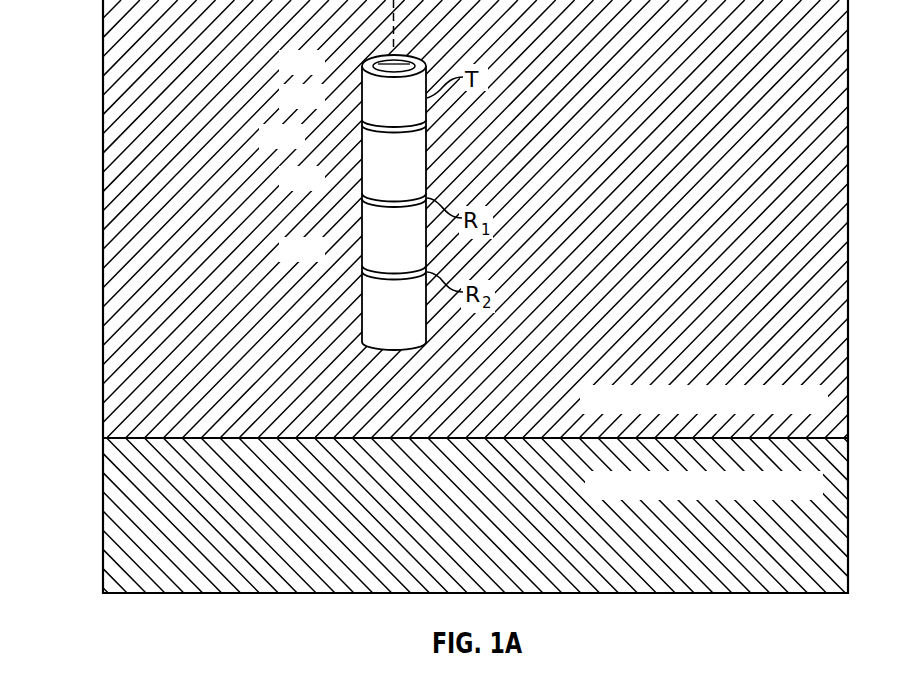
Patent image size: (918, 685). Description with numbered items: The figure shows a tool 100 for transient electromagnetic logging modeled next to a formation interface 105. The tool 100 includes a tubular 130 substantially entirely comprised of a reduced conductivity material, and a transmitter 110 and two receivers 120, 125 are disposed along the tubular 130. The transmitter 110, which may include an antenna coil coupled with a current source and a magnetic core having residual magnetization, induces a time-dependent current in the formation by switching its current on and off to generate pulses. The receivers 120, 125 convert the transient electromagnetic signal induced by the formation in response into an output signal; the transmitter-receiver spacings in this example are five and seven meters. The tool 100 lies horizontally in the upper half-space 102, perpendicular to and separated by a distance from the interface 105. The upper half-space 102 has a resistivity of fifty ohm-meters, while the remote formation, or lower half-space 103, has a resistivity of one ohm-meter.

The tool 100 is at (337, 150).
The upper half-space 102 is at (103, 215).
The remote formation (lower half-space) 103 is at (103, 517).
The formation interface 105 is at (224, 429).
The transmitter 110 is at (361, 95).
The receiver 120 is at (361, 201).
The receiver 125 is at (361, 276).
The tubular 130 is at (361, 139).